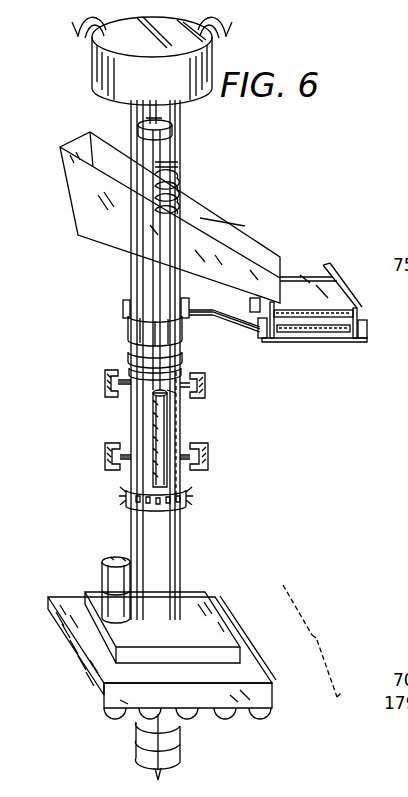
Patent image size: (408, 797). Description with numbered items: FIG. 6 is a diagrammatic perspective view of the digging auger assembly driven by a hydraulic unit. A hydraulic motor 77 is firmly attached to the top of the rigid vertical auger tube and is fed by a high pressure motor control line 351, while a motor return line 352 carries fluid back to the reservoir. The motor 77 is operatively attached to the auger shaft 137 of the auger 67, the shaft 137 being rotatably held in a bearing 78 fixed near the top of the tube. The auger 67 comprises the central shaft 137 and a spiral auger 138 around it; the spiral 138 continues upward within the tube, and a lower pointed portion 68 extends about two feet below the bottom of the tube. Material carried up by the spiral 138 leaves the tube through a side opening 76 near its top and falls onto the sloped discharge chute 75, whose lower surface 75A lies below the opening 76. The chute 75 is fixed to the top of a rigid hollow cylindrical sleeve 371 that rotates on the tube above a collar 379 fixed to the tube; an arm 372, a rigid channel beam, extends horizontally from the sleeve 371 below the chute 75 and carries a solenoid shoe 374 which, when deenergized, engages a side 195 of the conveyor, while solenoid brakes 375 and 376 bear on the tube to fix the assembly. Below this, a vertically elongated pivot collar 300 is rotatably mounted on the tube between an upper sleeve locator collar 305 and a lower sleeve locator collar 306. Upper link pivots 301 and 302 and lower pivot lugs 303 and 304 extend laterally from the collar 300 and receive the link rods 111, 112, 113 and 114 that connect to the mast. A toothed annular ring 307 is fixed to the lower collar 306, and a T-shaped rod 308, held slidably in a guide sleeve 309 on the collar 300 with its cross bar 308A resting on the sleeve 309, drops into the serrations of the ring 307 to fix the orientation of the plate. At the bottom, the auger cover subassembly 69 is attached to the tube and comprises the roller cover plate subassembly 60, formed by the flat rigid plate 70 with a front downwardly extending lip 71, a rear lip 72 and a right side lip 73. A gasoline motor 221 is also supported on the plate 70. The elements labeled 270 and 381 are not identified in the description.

The hydraulic motor 77 is at (173, 83).
The motor return line 352 is at (80, 30).
The high pressure motor control line 351 is at (212, 30).
The pivot collar 300 is at (142, 424).
The auger shaft 137 is at (160, 152).
The bearing 78 is at (170, 140).
The side opening 76 is at (176, 162).
The auger 67 is at (174, 203).
The discharge chute 75 is at (85, 211).
The spiral auger 138 is at (177, 215).
The lower surface of chute 75A is at (283, 273).
The side of conveyor 195 is at (358, 322).
The roller rail 381 is at (338, 332).
The solenoid brake 375 is at (127, 304).
The solenoid brake 376 is at (188, 309).
The cylindrical sleeve 371 is at (130, 331).
The collar 379 is at (128, 347).
The arm 372 is at (216, 322).
The solenoid shoe 374 is at (256, 328).
The arm assembly 270 is at (276, 383).
The rod 112 is at (105, 383).
The upper link pivot 301 is at (205, 387).
The upper link pivot 302 is at (123, 394).
The rod 114 is at (105, 461).
The rod 113 is at (210, 466).
The lower pivot lug 303 is at (200, 453).
The lower pivot lug 304 is at (125, 470).
The upper sleeve locator collar 305 is at (182, 378).
The guide sleeve 309 is at (165, 438).
The rod 111 is at (213, 402).
The cross bar 308A is at (188, 393).
The T-shaped rod 308 is at (126, 492).
The lower sleeve locator collar 306 is at (192, 503).
The toothed annular ring 307 is at (186, 502).
The gasoline motor 221 is at (108, 582).
The roller cover plate subassembly 60 is at (212, 630).
The rear downwardly extending lip 72 is at (246, 652).
The flat rigid plate 70 is at (240, 680).
The front downwardly extending lip 71 is at (74, 646).
The right side downwardly extending lip 73 is at (268, 699).
The auger cover subassembly 69 is at (312, 641).
The lower pointed portion of auger 68 is at (178, 750).